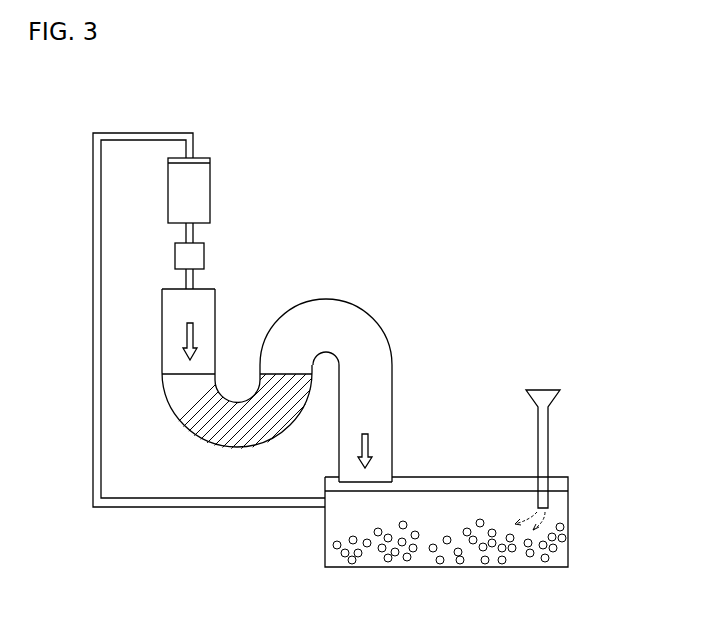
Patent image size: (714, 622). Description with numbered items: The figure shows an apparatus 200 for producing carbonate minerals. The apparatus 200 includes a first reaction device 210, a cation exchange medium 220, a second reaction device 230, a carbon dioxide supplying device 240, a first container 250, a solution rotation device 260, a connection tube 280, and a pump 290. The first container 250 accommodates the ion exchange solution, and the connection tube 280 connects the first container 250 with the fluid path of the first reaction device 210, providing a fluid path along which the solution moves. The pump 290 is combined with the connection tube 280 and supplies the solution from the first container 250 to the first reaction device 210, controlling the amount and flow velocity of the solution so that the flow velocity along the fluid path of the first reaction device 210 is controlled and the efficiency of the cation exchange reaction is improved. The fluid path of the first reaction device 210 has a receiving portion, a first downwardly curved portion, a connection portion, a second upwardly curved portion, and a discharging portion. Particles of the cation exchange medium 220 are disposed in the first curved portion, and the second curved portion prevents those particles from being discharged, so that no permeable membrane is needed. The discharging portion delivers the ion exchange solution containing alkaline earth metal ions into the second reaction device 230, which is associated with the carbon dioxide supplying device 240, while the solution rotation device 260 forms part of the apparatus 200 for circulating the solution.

The apparatus of producing the carbonate minerals 200 is at (427, 107).
The first reaction device 210 is at (322, 302).
The cation exchange medium 220 is at (237, 446).
The second reaction device 230 is at (568, 545).
The carbon dioxide supplying device 240 is at (548, 430).
The first container 250 is at (210, 189).
The solution rotation device 260 is at (93, 303).
The connection tube 280 is at (193, 233).
The pump 290 is at (204, 256).